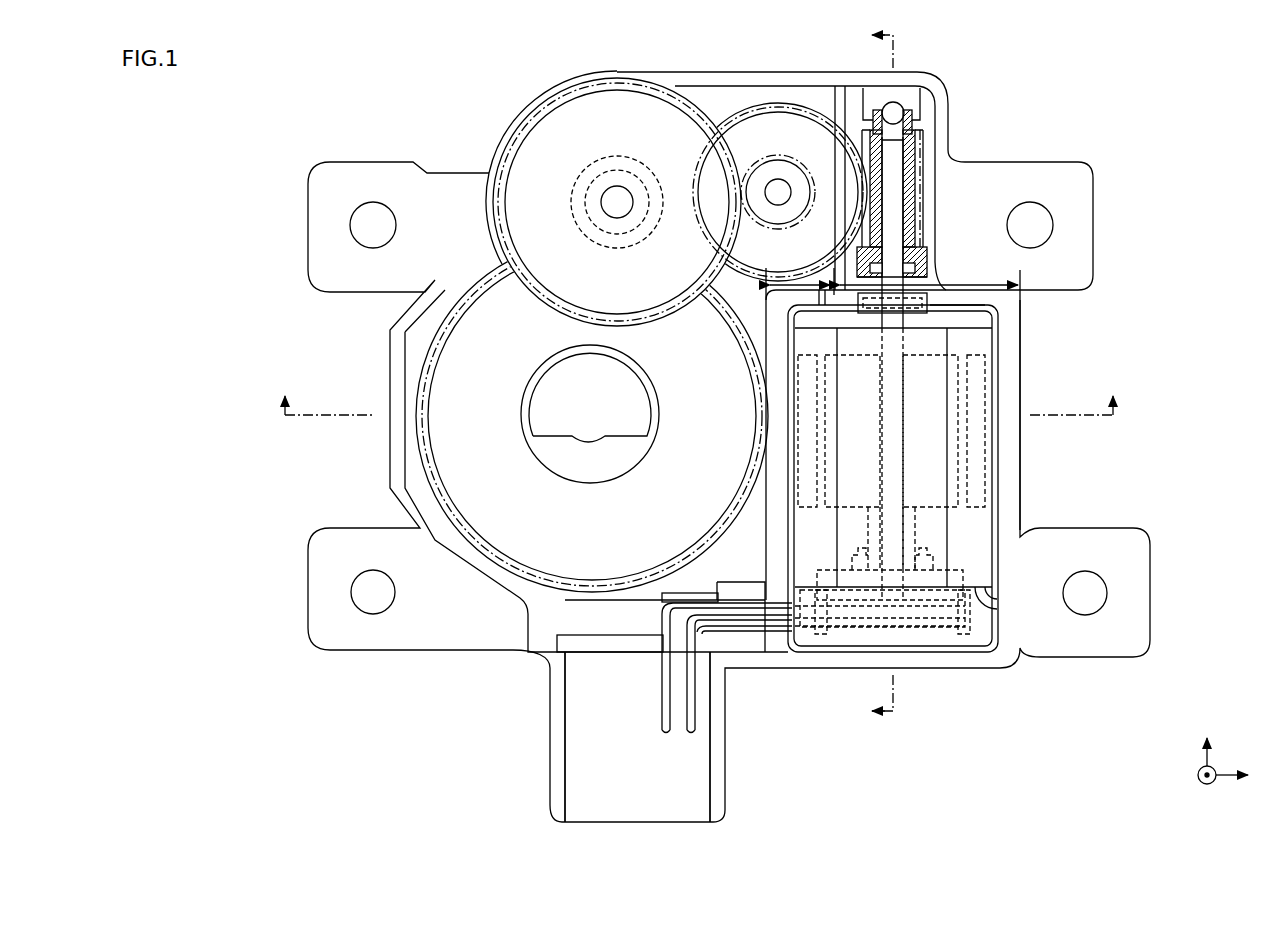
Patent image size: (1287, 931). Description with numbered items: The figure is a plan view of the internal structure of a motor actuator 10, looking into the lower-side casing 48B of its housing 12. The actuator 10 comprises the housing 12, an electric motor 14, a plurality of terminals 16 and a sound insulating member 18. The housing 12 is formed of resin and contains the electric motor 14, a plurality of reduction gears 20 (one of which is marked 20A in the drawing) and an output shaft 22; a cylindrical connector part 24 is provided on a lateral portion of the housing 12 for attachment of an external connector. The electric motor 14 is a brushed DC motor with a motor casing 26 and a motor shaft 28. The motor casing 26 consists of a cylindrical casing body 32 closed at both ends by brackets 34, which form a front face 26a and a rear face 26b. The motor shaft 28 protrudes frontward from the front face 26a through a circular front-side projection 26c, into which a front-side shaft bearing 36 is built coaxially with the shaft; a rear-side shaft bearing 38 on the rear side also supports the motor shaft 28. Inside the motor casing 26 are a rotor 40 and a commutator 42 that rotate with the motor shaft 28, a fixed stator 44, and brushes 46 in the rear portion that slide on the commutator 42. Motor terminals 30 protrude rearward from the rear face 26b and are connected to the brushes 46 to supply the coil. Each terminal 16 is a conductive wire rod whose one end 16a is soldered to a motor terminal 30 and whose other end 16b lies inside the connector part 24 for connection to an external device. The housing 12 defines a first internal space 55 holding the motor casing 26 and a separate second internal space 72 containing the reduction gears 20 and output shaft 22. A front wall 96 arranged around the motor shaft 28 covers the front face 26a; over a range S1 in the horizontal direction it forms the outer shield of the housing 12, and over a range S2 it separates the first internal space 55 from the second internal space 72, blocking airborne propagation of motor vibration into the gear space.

The actuator 10 is at (1154, 274).
The housing 12 is at (1038, 512).
The electric motor 14 is at (1001, 395).
The terminals 16 is at (733, 598).
The one end of terminal 16a is at (805, 620).
The other end of terminal 16b is at (660, 680).
The sound insulating member 18 is at (985, 628).
The reduction gears 20 is at (648, 88).
The worm gear 20A is at (905, 118).
The output shaft 22 is at (528, 433).
The connector part 24 is at (548, 716).
The motor casing 26 is at (996, 433).
The front face 26a is at (930, 312).
The rear face 26b is at (996, 592).
The front-side projection 26c is at (935, 298).
The motor shaft 28 is at (900, 170).
The motor terminals 30 is at (820, 636).
The casing body 32 is at (980, 345).
The brackets 34 is at (976, 328).
The front-side shaft bearing 36 is at (871, 314).
The rear-side shaft bearing 38 is at (912, 635).
The rotor 40 is at (932, 457).
The commutator 42 is at (917, 528).
The stator 44 is at (810, 495).
The brush 46 is at (865, 552).
The lower-side casing 48B is at (1026, 490).
The first internal space 55 is at (813, 472).
The second internal space 72 is at (456, 470).
The front wall 96 is at (938, 314).
The range S1 is at (975, 285).
The range S2 is at (771, 270).